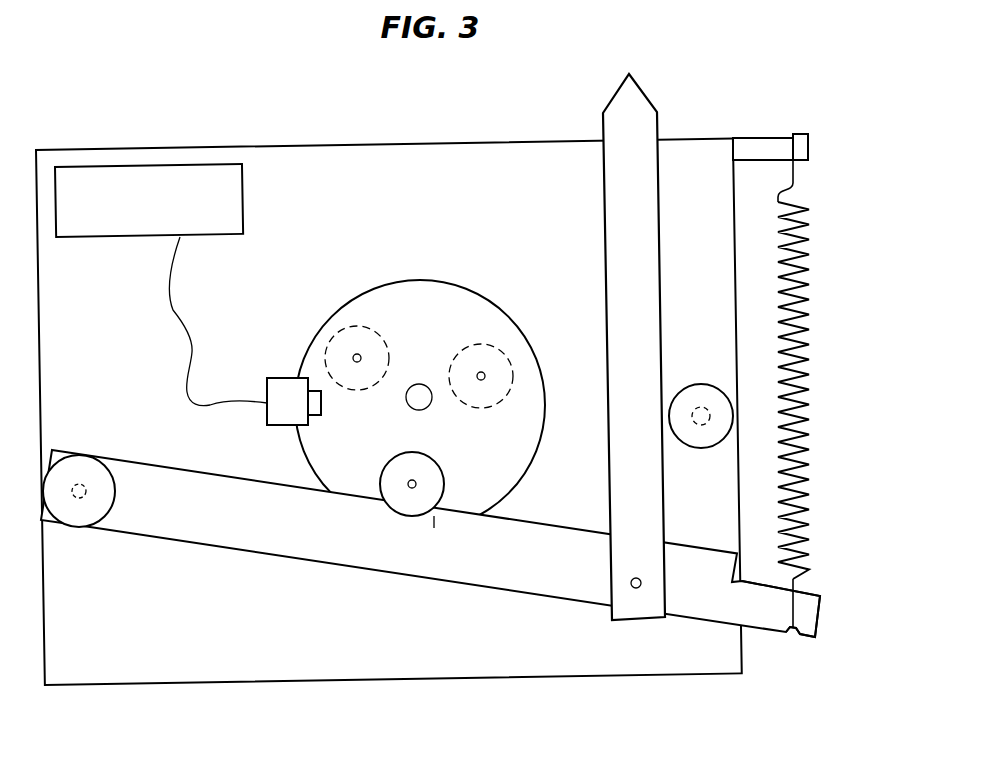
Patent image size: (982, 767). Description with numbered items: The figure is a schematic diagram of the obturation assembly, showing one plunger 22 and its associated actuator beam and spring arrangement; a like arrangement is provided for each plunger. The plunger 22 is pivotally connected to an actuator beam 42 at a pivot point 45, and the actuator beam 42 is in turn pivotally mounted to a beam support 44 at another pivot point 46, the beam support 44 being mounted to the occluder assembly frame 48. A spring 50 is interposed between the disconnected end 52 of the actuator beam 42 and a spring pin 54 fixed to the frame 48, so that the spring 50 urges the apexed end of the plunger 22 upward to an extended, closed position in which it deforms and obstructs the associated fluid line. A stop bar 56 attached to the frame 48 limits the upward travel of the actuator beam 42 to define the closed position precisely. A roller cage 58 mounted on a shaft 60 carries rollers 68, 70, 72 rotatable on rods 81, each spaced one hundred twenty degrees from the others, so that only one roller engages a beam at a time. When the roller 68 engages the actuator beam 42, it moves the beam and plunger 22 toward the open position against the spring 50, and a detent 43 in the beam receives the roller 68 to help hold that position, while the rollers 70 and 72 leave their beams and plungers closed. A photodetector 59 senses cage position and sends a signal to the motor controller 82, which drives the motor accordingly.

The plunger 22 is at (603, 103).
The actuator beam 42 is at (300, 532).
The detent 43 is at (434, 528).
The beam support 44 is at (85, 528).
The pivot point 45 is at (631, 589).
The pivot point 46 is at (80, 484).
The occluder assembly frame 48 is at (342, 143).
The spring 50 is at (799, 338).
The disconnected end 52 is at (822, 619).
The spring pin 54 is at (752, 137).
The stop bar 56 is at (700, 383).
The roller cage 58 is at (438, 280).
The photodetector 59 is at (285, 378).
The shaft 60 is at (419, 397).
The roller 68 is at (442, 463).
The roller 70 is at (336, 338).
The roller 72 is at (480, 345).
The rods 81 is at (357, 354).
The motor controller 82 is at (243, 203).